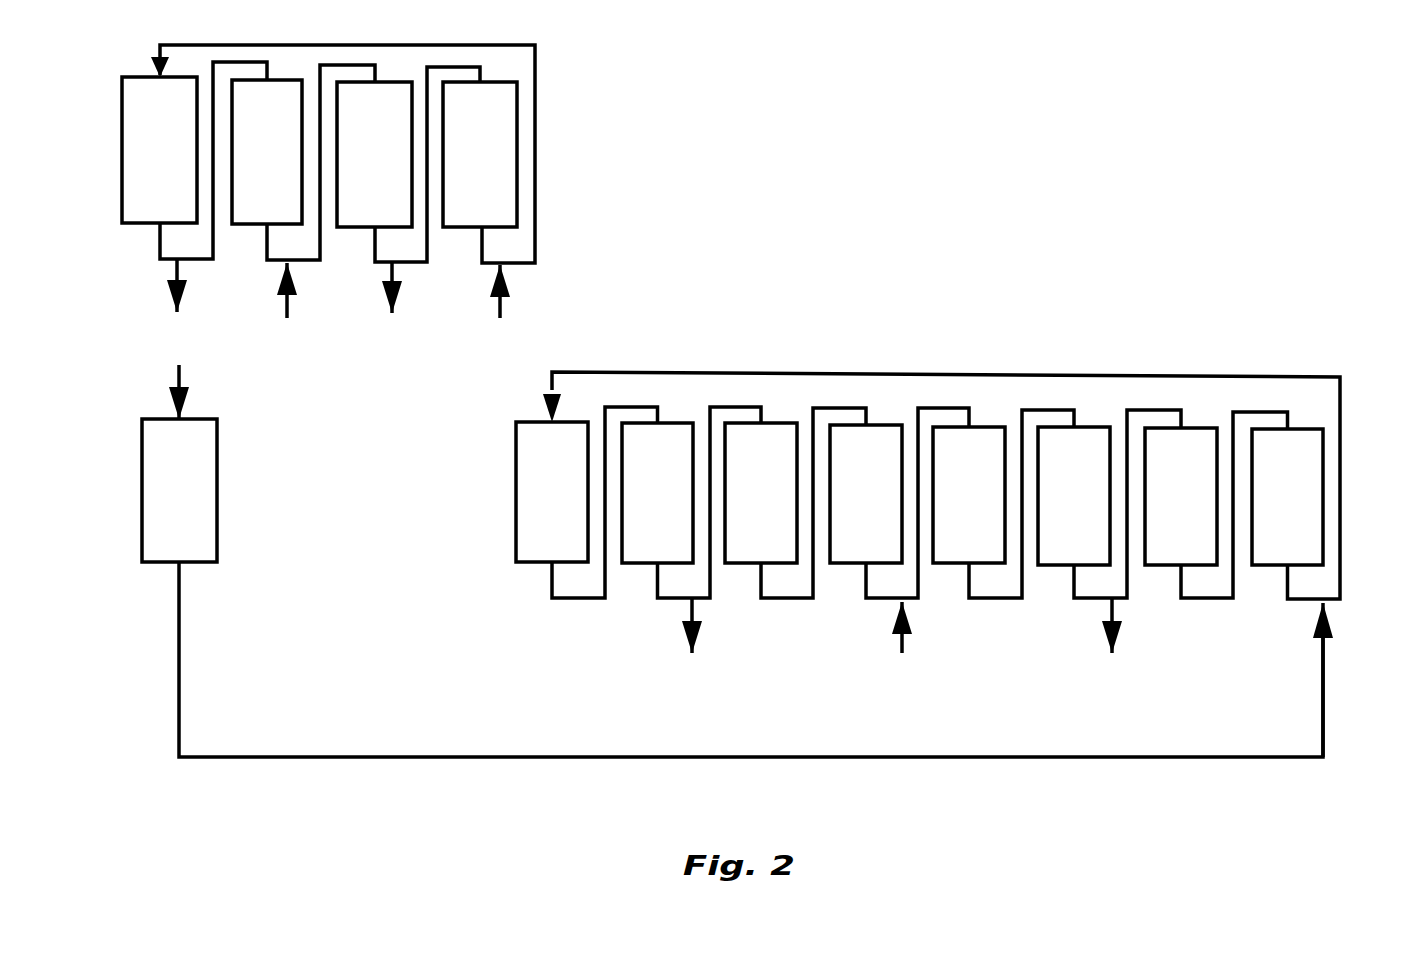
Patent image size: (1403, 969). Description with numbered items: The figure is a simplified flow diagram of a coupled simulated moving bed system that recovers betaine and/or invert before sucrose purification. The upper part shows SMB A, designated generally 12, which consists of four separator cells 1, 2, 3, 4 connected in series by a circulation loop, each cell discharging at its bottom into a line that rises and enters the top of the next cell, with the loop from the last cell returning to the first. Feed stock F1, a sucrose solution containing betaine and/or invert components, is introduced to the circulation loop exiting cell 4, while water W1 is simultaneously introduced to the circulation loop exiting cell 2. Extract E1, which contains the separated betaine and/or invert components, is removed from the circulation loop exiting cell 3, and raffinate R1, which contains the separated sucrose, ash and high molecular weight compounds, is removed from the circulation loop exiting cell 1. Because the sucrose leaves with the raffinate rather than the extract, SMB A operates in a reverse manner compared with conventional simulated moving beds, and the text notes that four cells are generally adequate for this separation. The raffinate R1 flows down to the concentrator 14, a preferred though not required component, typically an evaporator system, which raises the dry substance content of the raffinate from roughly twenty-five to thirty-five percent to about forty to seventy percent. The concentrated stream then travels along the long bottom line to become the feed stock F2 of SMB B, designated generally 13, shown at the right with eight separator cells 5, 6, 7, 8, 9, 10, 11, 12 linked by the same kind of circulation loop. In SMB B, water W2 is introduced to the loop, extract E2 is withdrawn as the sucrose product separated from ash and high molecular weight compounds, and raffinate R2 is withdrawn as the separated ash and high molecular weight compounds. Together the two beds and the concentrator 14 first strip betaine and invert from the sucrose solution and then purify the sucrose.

The cell 1 is at (159, 150).
The cell 2 is at (267, 152).
The cell 3 is at (374, 154).
The cell 4 is at (480, 154).
The cell 5 is at (552, 492).
The cell 6 is at (657, 493).
The cell 7 is at (761, 493).
The cell 8 is at (866, 494).
The cell 9 is at (969, 495).
The cell 10 is at (1074, 496).
The cell 11 is at (1181, 496).
The SMB A 12 is at (405, 145).
The SMB B 13 is at (928, 429).
The concentrator 14 is at (179, 463).
The raffinate R1 is at (180, 306).
The water W1 is at (287, 308).
The extract E1 is at (389, 308).
The feed stock F1 is at (499, 309).
The raffinate R2 is at (693, 644).
The water W2 is at (902, 646).
The extract E2 is at (1109, 645).
The feed stock F2 is at (1341, 680).